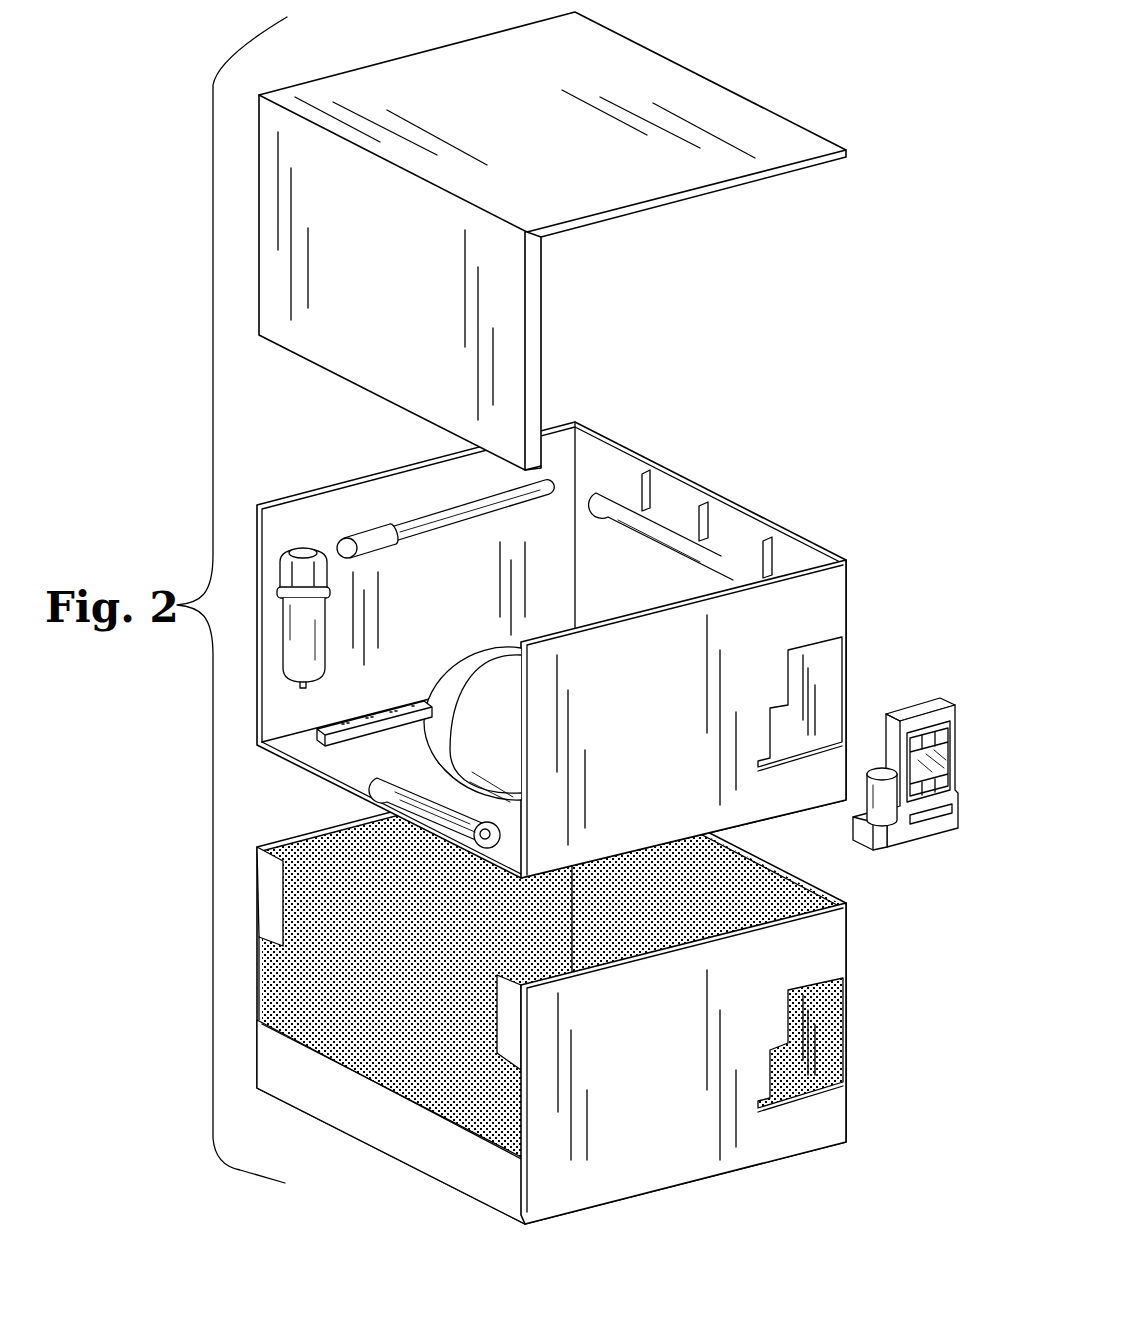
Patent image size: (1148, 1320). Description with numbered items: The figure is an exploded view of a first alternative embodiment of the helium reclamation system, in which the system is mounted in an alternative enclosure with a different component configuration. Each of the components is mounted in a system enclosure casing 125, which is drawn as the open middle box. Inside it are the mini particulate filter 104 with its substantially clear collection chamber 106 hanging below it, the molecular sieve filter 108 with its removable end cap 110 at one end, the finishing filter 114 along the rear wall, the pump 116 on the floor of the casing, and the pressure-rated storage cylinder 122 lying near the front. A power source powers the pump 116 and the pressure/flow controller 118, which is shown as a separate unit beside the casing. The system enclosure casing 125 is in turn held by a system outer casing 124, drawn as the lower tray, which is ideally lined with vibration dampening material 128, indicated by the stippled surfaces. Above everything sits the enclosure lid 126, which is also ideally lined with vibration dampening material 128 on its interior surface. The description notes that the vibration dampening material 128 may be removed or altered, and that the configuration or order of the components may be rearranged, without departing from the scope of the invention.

The mini particulate filter 104 is at (292, 552).
The collection chamber 106 is at (293, 640).
The molecular sieve filter 108 is at (430, 520).
The removable end cap 110 is at (360, 533).
The finishing filter 114 is at (650, 530).
The pump 116 is at (427, 735).
The pressure/flow controller 118 is at (930, 832).
The pressure-rated storage cylinder 122 is at (388, 790).
The system outer casing 124 is at (544, 994).
The system enclosure casing 125 is at (848, 597).
The enclosure lid 126 is at (757, 97).
The vibration dampening material 128 is at (293, 968).